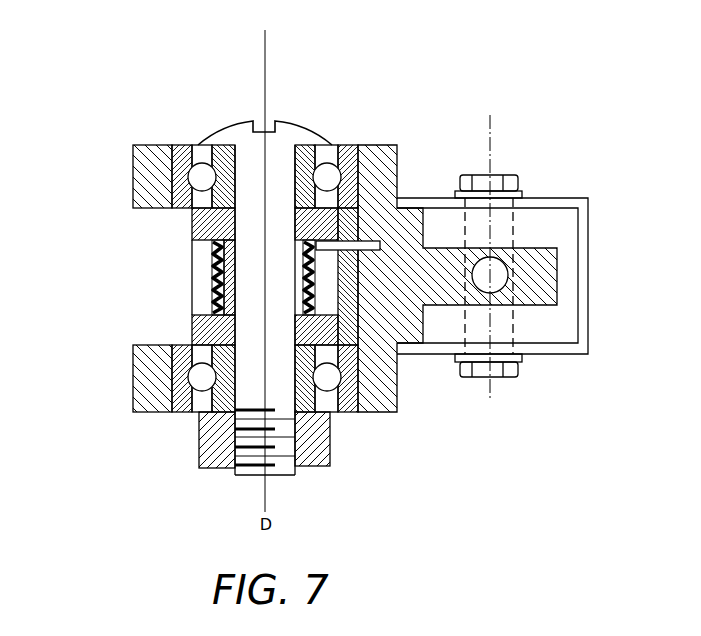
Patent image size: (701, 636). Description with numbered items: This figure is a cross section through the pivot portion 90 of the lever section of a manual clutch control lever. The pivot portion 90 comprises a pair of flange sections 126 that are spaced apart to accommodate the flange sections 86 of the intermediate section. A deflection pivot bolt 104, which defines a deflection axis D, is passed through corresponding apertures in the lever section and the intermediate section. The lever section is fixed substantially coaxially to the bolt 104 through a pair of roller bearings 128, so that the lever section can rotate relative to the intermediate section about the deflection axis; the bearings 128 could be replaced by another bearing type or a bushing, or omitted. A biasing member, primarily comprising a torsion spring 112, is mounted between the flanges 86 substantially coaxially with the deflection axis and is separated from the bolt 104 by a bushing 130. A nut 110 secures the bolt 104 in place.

The pivot portion 90 is at (431, 58).
The flange sections 86 is at (192, 224).
The deflection pivot bolt 104 is at (247, 148).
The nut 110 is at (315, 468).
The torsion spring 112 is at (224, 293).
The flange sections 126 is at (133, 145).
The roller bearings 128 is at (334, 148).
The bushing 130 is at (212, 275).